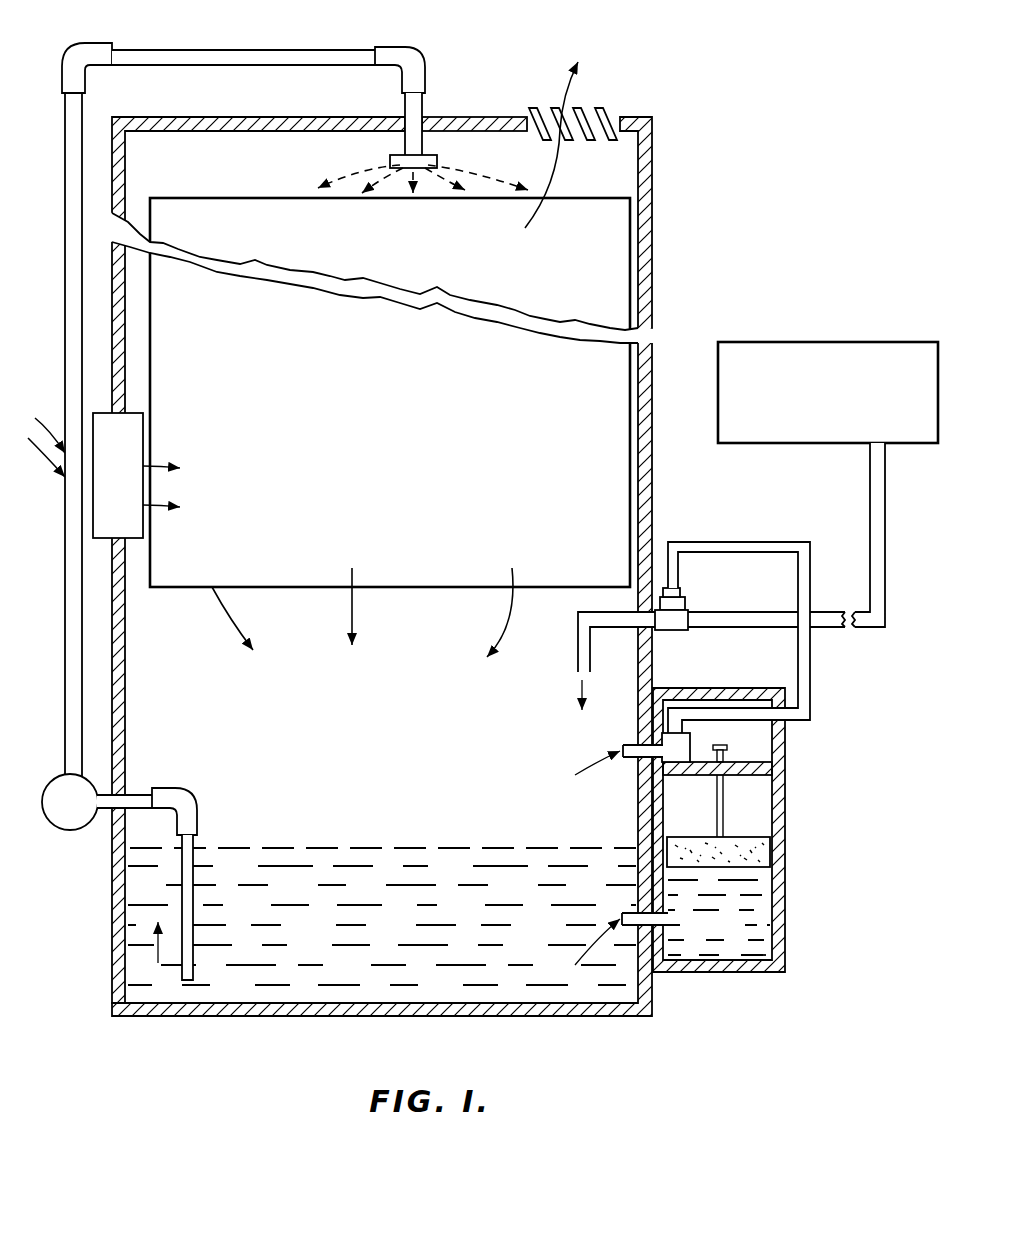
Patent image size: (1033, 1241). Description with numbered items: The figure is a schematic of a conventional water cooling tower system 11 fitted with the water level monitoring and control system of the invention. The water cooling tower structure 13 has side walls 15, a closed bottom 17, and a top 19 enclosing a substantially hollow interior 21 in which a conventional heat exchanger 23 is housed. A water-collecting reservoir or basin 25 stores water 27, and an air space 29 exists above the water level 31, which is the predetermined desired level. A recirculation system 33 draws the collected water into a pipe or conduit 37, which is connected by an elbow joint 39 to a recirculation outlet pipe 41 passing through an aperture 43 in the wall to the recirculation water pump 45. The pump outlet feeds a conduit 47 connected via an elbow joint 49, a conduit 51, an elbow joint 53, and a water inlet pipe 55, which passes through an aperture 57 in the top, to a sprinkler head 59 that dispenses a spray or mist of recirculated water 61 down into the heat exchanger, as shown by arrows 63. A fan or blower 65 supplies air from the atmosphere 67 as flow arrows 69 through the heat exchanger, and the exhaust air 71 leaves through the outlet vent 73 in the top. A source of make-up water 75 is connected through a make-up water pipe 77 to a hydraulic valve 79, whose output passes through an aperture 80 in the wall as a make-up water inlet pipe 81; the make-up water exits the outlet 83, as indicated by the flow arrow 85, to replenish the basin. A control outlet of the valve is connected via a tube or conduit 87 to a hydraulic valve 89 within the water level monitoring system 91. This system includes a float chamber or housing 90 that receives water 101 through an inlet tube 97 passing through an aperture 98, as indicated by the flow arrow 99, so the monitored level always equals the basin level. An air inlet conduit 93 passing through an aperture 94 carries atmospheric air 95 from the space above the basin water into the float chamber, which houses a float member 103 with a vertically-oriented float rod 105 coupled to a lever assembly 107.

The water cooling tower system 11 is at (427, 562).
The water cooling tower structure 13 is at (653, 237).
The side walls 15 is at (112, 292).
The closed bottom 17 is at (540, 1016).
The top 19 is at (468, 117).
The hollow interior 21 is at (200, 157).
The heat exchanger 23 is at (387, 461).
The water-collecting reservoir or basin 25 is at (350, 965).
The water 27 is at (368, 929).
The air space 29 is at (358, 731).
The water level 31 is at (270, 845).
The recirculation system 33 is at (85, 653).
The pipe or conduit 37 is at (195, 905).
The elbow joint 39 is at (180, 789).
The recirculation outlet pipe 41 is at (140, 793).
The aperture 43 is at (105, 790).
The recirculation water pump 45 is at (80, 830).
The pipe or conduit 47 is at (82, 603).
The elbow joint 49 is at (88, 42).
The conduit 51 is at (205, 50).
The elbow joint 53 is at (390, 47).
The water inlet pipe 55 is at (425, 103).
The aperture 57 is at (403, 110).
The sprinkler head 59 is at (437, 158).
The spray or mist of recirculated water 61 is at (385, 177).
The arrows 63 is at (212, 605).
The fan or blower 65 is at (135, 413).
The atmosphere 67 is at (46, 434).
The flow directional arrows 69 is at (173, 461).
The exhaust air 71 is at (563, 160).
The outlet vent 73 is at (612, 110).
The source of make-up water 75 is at (780, 342).
The make-up water pipe 77 is at (887, 512).
The hydraulic valve 79 is at (680, 632).
The aperture 80 is at (648, 630).
The make-up water inlet pipe 81 is at (578, 635).
The aperture or outlet 83 is at (580, 685).
The directional flow arrow 85 is at (586, 694).
The tube or conduit 87 is at (733, 540).
The hydraulic valve 89 is at (653, 778).
The float chamber or housing 90 is at (785, 892).
The water level monitoring system 91 is at (805, 792).
The air inlet pipe or conduit 93 is at (655, 777).
The aperture 94 is at (623, 745).
The atmospheric air 95 is at (568, 766).
The inlet tube 97 is at (622, 915).
The aperture 98 is at (630, 928).
The directional flow arrow 99 is at (567, 942).
The water 101 is at (702, 936).
The float member 103 is at (750, 850).
The float rod 105 is at (736, 791).
The lever assembly 107 is at (752, 762).